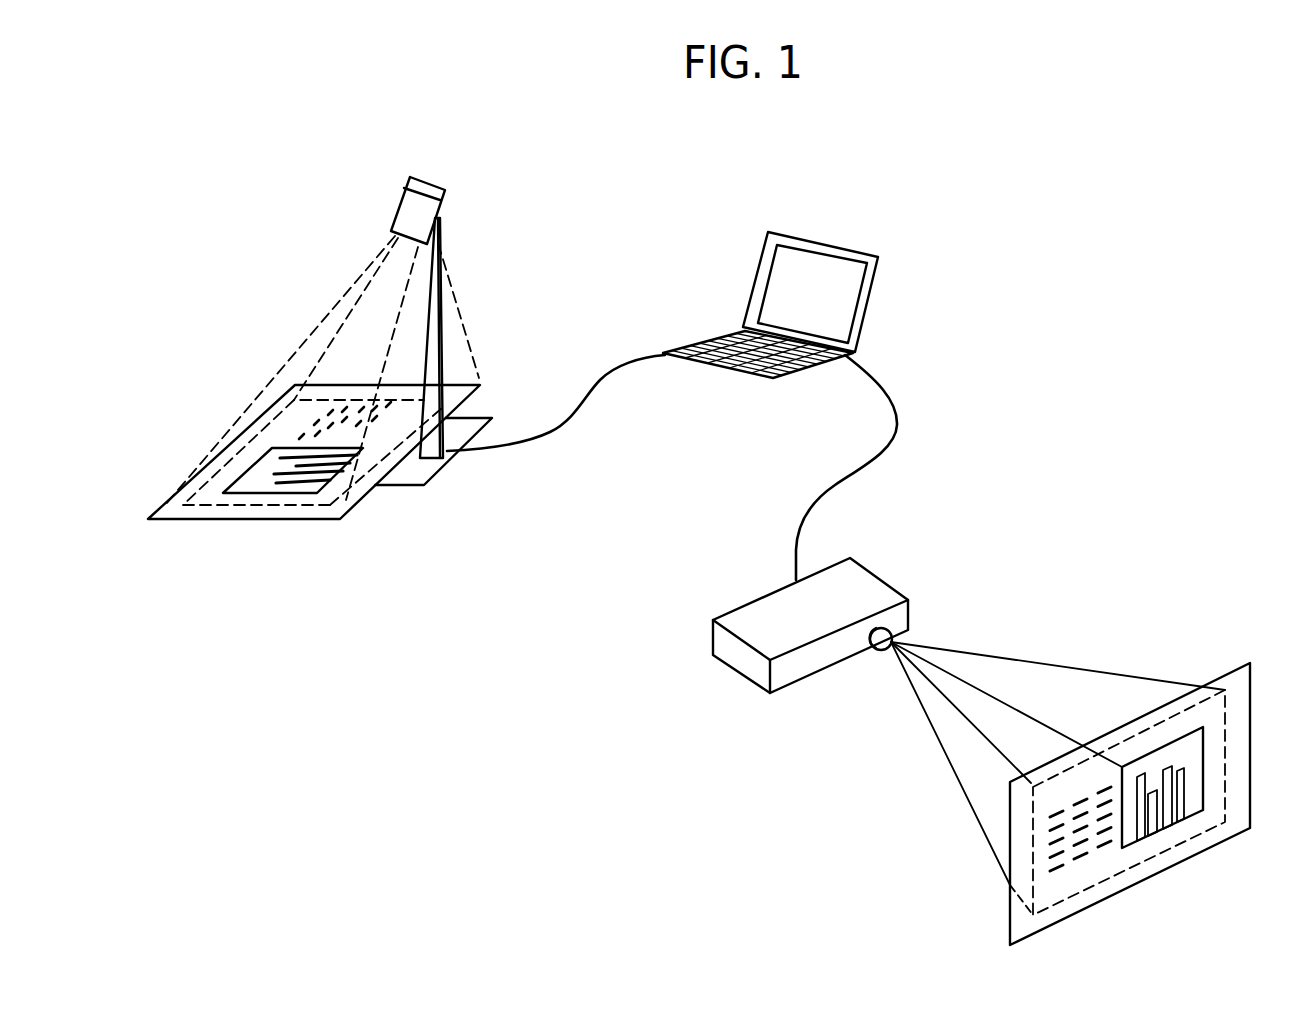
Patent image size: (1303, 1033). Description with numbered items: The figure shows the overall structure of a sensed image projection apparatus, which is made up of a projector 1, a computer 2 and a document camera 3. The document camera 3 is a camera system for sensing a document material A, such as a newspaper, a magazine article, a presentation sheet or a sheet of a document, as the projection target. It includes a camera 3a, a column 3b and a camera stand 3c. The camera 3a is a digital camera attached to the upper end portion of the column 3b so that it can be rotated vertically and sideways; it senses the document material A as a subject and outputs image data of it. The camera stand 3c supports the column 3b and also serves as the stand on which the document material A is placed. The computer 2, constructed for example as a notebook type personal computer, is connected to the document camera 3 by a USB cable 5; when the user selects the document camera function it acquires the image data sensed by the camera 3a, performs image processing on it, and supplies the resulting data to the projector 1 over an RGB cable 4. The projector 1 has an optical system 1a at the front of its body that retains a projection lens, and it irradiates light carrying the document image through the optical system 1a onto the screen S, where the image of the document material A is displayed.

The projector 1 is at (879, 578).
The optical system 1a is at (869, 648).
The computer 2 is at (820, 244).
The document camera 3 is at (542, 192).
The camera 3a is at (434, 185).
The column 3b is at (443, 286).
The camera stand 3c is at (485, 418).
The RGB cable 4 is at (899, 432).
The USB cable 5 is at (562, 437).
The document material A is at (256, 522).
The screen S is at (1244, 664).